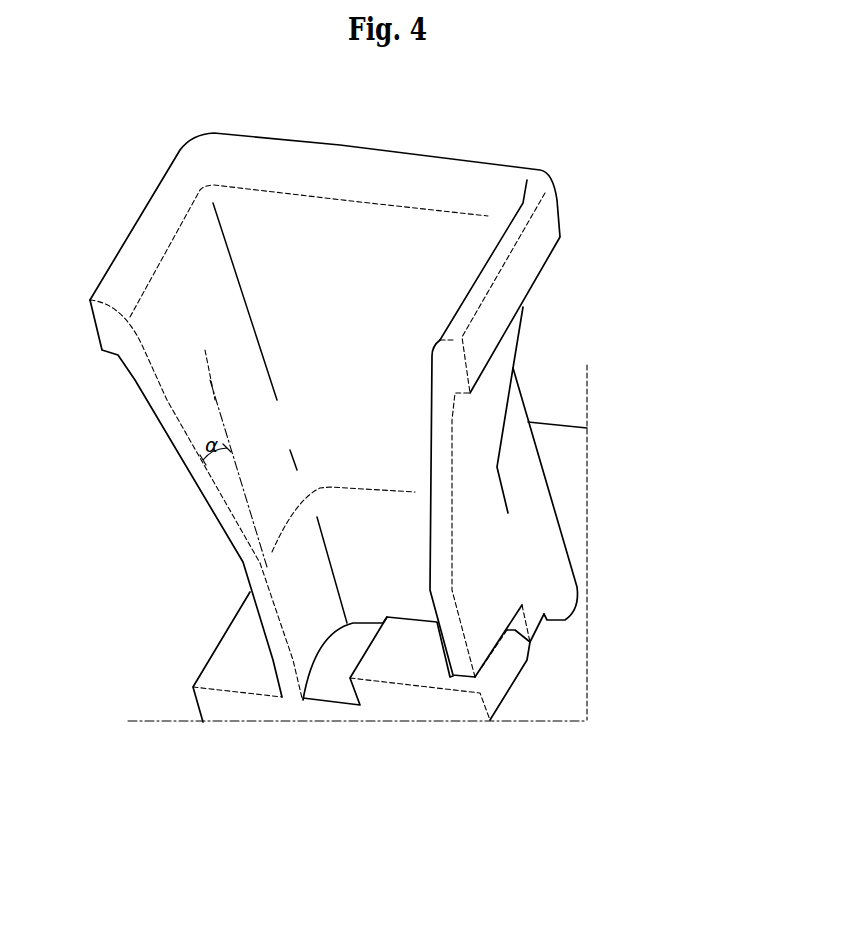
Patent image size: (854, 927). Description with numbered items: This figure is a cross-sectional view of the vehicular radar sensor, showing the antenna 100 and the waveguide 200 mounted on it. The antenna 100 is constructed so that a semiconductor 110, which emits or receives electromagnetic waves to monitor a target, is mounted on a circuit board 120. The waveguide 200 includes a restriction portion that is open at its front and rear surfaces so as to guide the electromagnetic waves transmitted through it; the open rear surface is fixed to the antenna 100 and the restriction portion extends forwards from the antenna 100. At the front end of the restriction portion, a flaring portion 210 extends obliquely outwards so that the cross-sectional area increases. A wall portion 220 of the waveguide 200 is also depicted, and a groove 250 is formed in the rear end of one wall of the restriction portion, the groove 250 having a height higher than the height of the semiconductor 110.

The antenna 100 is at (329, 602).
The semiconductor 110 is at (405, 667).
The circuit board 120 is at (243, 670).
The waveguide 200 is at (570, 212).
The flaring portion 210 is at (490, 397).
The plate 220 is at (530, 553).
The groove 250 is at (546, 619).